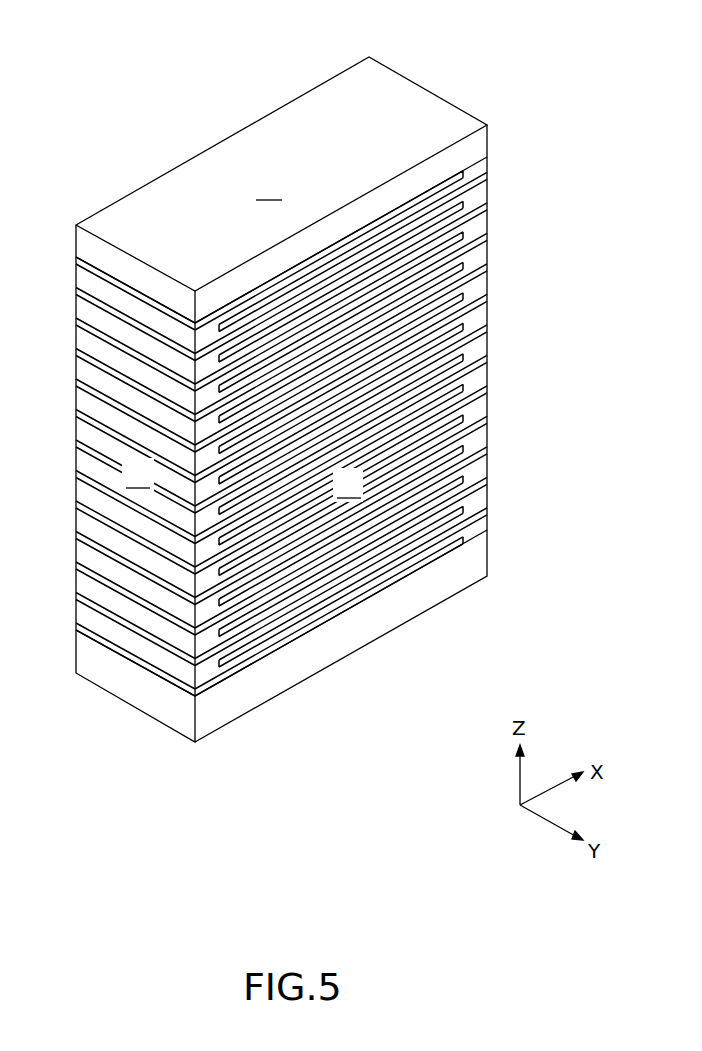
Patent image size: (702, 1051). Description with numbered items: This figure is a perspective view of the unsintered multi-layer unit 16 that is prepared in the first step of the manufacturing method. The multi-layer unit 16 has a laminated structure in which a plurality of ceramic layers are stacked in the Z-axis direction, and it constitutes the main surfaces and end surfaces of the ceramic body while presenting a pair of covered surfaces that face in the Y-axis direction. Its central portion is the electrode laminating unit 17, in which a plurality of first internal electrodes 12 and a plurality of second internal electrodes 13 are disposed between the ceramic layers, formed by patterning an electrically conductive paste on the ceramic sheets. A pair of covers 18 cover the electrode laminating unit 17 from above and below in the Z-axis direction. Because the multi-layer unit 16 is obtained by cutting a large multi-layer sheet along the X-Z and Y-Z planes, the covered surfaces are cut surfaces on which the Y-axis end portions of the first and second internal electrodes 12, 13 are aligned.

The multi-layer unit 16 is at (278, 377).
The covers 18 is at (251, 150).
The first internal electrodes 12 is at (72, 254).
The second internal electrodes 13 is at (371, 433).
The electrode laminating unit 17 is at (362, 434).